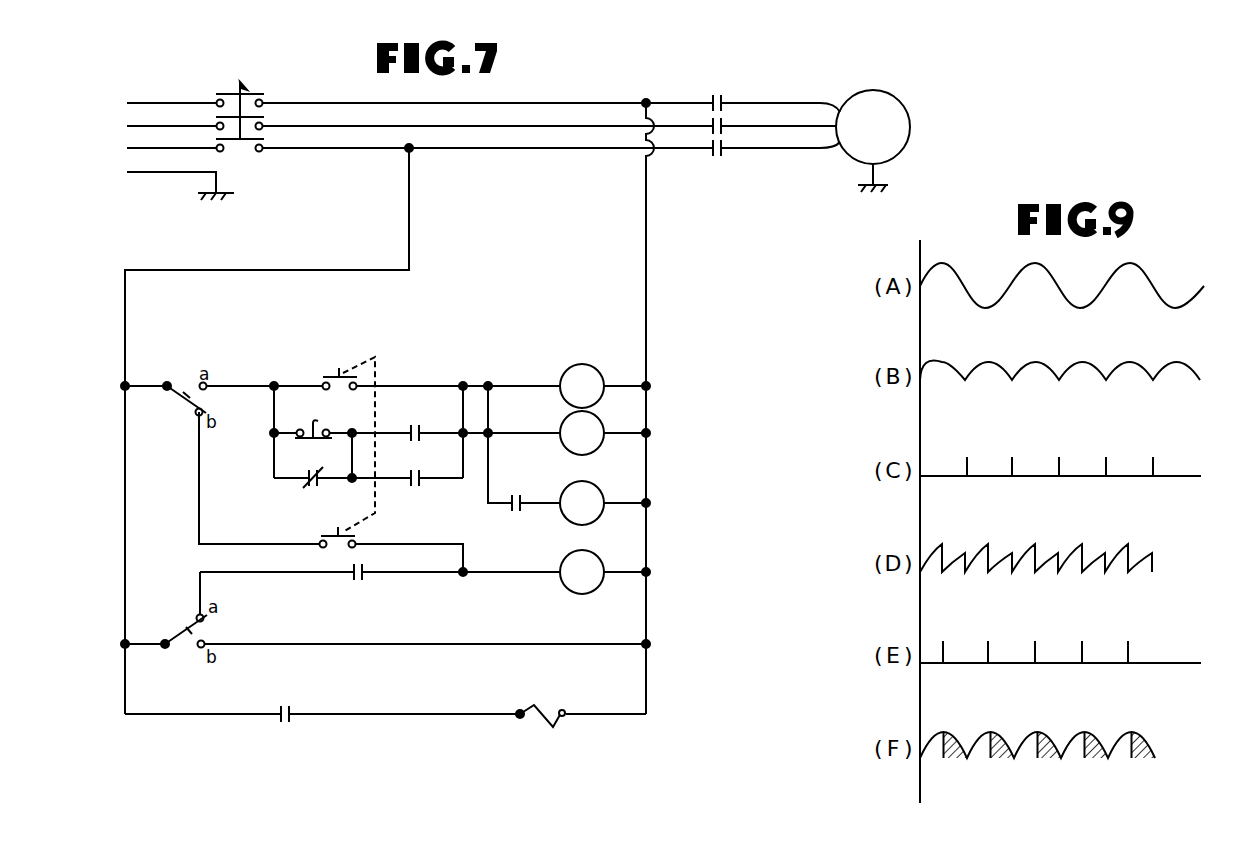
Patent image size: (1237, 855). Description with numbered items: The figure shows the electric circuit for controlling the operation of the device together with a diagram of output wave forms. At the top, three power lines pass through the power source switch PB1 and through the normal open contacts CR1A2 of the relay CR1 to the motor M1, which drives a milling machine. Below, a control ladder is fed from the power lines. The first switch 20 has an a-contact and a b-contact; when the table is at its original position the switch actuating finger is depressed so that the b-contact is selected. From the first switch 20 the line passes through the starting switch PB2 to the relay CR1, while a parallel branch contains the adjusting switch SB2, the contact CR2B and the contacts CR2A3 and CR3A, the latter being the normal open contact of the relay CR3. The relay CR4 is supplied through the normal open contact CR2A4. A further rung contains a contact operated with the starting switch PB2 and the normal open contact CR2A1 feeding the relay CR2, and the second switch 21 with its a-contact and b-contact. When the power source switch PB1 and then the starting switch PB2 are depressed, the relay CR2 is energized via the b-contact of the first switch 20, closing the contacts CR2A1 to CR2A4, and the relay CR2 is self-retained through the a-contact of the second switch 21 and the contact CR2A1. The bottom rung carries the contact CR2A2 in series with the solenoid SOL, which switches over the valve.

The first switch 20 is at (186, 399).
The second switch 21 is at (178, 632).
The power source switch PB1 is at (240, 105).
The normal open contact of relay CR1 CR1A2 is at (729, 114).
The motor M1 is at (873, 141).
The starting switch PB2 is at (348, 437).
The adjusting switch SB2 is at (312, 416).
The relay CR1 is at (582, 386).
The relay CR2 is at (582, 572).
The relay CR3 is at (582, 433).
The relay CR4 is at (582, 503).
The normal open contact of relay CR2 CR2A3 is at (419, 419).
The normal open contact of relay CR3 CR3A is at (418, 494).
The normal close contact of relay CR2 CR2B is at (306, 492).
The normal open contact of relay CR2 CR2A4 is at (519, 519).
The normal open contact of relay CR2 CR2A1 is at (360, 587).
The normal open contact of relay CR2 CR2A2 is at (285, 730).
The solenoid SOL is at (540, 729).